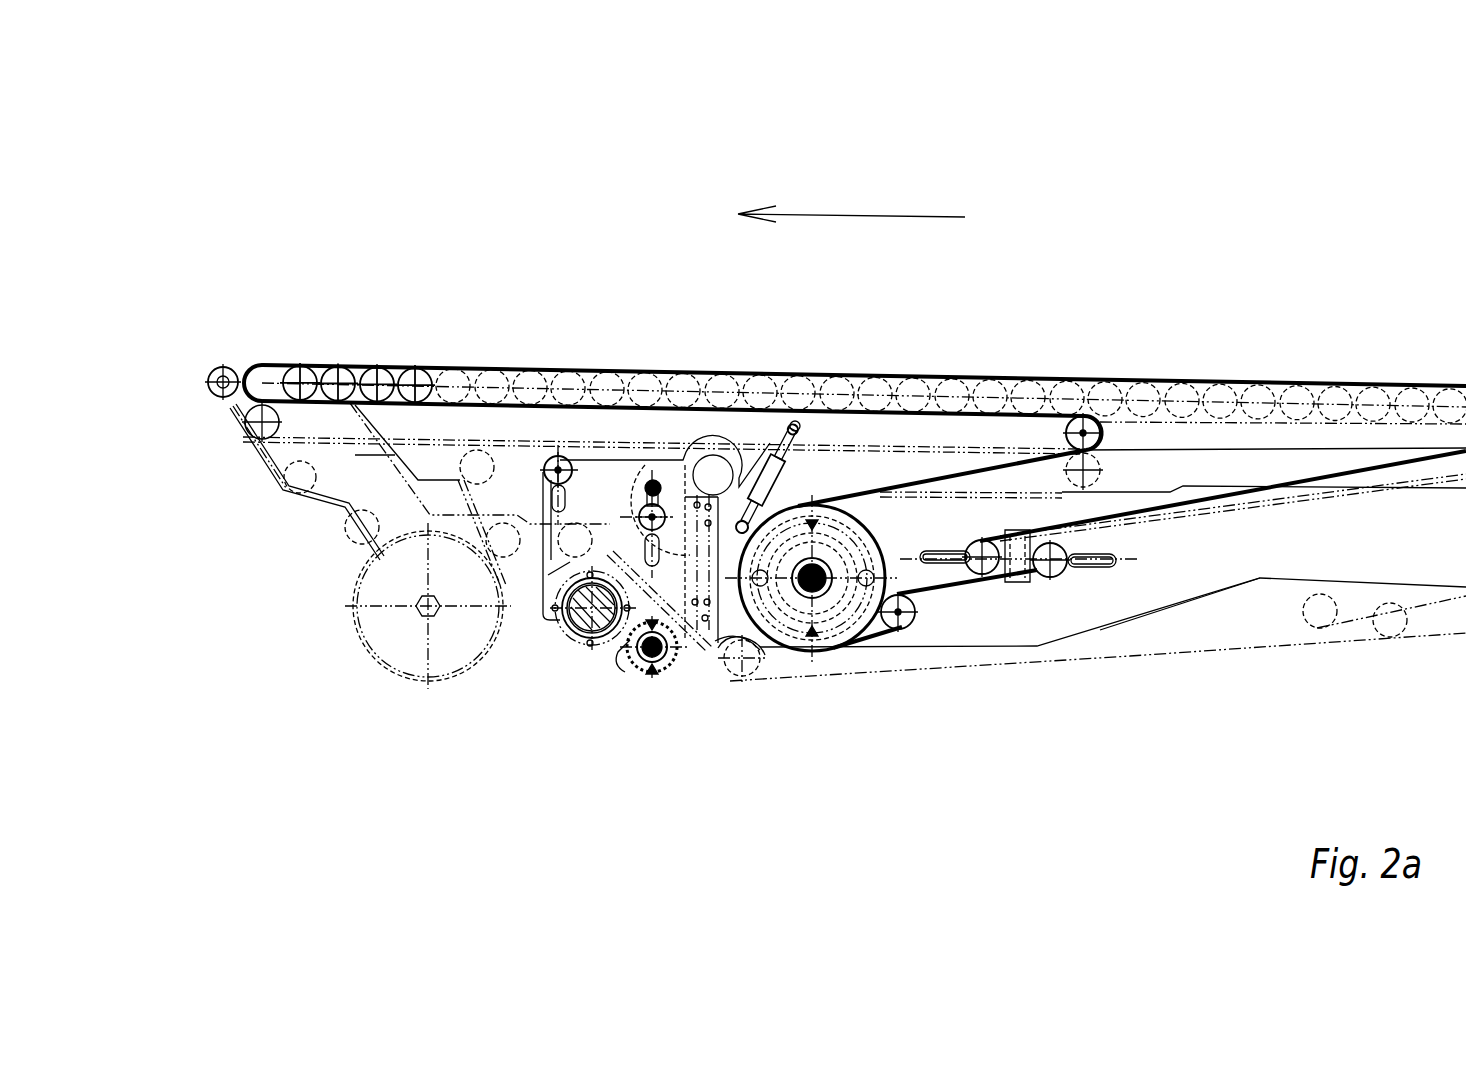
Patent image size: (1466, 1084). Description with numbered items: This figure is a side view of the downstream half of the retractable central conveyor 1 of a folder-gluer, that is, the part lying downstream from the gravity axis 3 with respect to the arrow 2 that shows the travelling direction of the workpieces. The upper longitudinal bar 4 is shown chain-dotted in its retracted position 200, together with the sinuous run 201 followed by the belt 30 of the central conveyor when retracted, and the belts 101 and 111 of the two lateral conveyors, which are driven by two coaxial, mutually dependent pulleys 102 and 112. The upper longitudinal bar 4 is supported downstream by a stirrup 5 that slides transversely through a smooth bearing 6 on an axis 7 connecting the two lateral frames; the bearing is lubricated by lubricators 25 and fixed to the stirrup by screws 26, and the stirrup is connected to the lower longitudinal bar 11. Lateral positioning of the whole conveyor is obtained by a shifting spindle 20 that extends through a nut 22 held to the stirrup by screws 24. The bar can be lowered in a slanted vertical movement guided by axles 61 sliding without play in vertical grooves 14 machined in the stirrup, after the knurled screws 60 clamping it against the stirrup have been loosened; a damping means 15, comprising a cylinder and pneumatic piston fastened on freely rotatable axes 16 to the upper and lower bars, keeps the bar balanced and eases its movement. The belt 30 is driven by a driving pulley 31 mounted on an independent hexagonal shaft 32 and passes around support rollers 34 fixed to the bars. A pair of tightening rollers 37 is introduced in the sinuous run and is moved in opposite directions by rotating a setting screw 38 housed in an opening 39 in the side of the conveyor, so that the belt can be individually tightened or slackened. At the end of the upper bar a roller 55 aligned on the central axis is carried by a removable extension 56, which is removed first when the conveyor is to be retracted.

The retractable central conveyor 1 is at (1352, 176).
The arrow 2 is at (865, 216).
The gravity axis 3 is at (1465, 352).
The upper longitudinal bar 4 is at (418, 455).
The stirrup 5 is at (628, 480).
The smooth bearing 6 is at (572, 650).
The axis 7 is at (592, 640).
The lower longitudinal bar 11 is at (1215, 540).
The vertical grooves 14 is at (593, 487).
The damping means 15 is at (757, 452).
The axes 16 is at (798, 430).
The shifting spindle 20 is at (727, 655).
The nut 22 is at (668, 660).
The screws 24 is at (652, 674).
The lubricators 25 is at (568, 571).
The screws 26 is at (545, 625).
The belt 30 is at (990, 493).
The driving pulley 31 is at (787, 623).
The hexagonal shaft 32 is at (815, 588).
The support rollers 34 is at (322, 368).
The tightening rollers 37 is at (1043, 578).
The setting screw 38 is at (940, 554).
The opening 39 is at (1012, 532).
The roller 55 is at (218, 366).
The removable extension 56 is at (242, 402).
The knurled screws 60 is at (548, 455).
The axles 61 is at (623, 477).
The belt 101 is at (333, 504).
The pulley 102 is at (400, 648).
The belt 111 is at (515, 322).
The pulley 112 is at (428, 628).
The retracted position 200 is at (373, 463).
The sinuous run 201 is at (967, 450).